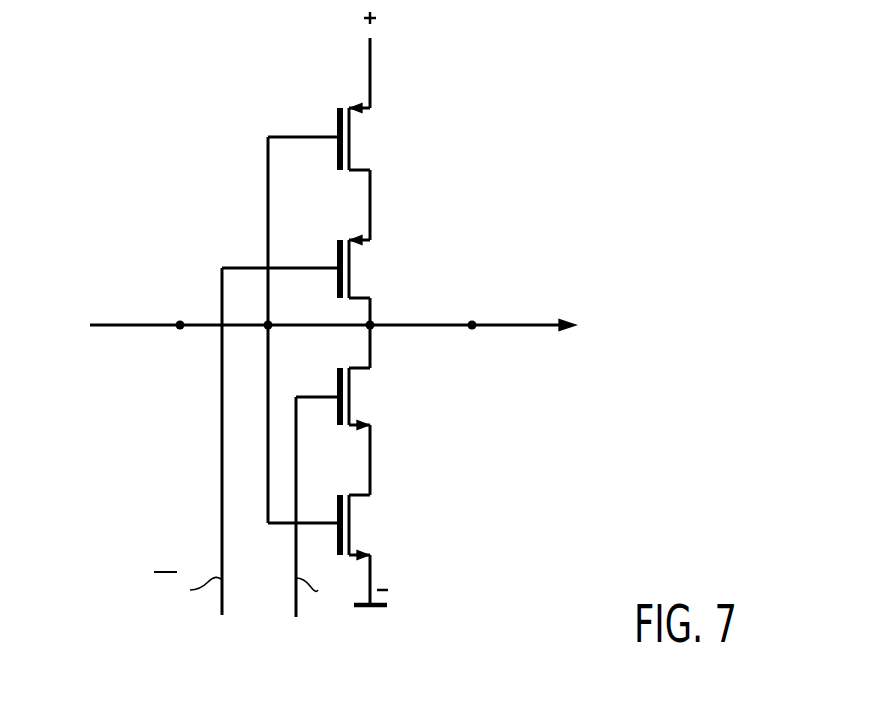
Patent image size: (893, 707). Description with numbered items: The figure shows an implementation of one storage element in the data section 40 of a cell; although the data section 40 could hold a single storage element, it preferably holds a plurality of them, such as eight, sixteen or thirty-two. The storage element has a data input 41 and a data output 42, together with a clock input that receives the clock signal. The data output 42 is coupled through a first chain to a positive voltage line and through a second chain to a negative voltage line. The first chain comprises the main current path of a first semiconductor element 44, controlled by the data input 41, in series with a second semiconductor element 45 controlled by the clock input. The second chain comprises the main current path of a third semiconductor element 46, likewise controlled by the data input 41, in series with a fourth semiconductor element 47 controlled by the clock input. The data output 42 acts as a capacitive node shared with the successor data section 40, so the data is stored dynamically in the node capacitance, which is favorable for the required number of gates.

The data section 40 is at (309, 328).
The data input 41 is at (180, 320).
The data output 42 is at (472, 330).
The first semiconductor element 44 is at (371, 131).
The second semiconductor element 45 is at (371, 272).
The third semiconductor element 46 is at (370, 393).
The fourth semiconductor element 47 is at (366, 520).